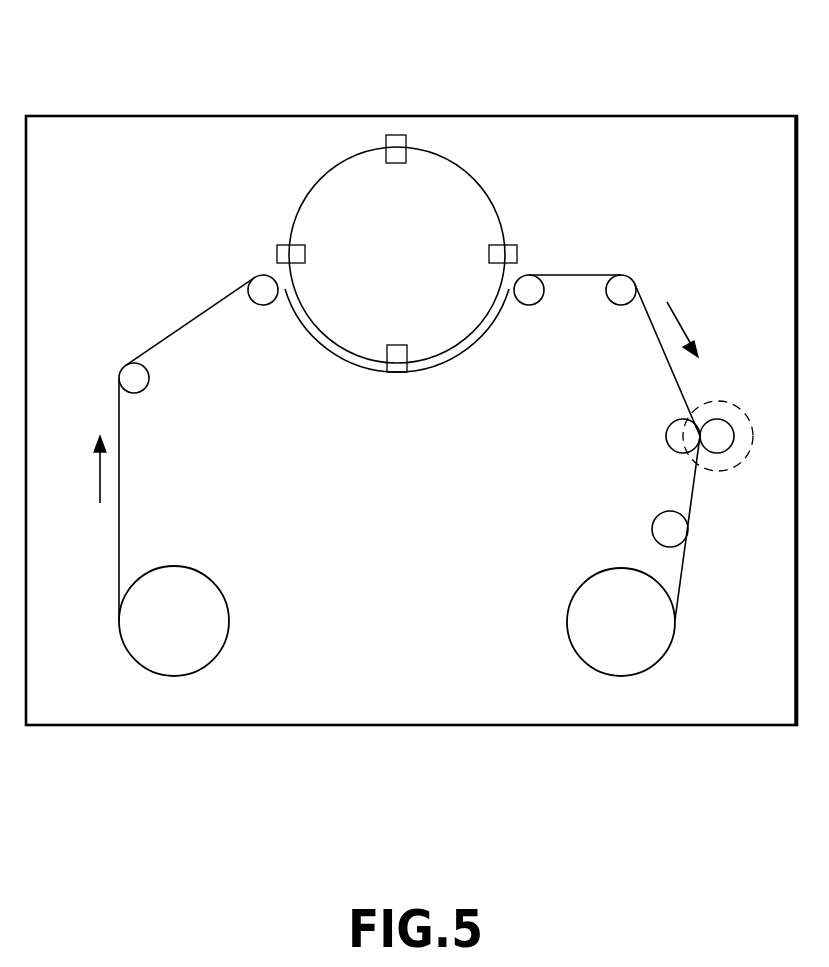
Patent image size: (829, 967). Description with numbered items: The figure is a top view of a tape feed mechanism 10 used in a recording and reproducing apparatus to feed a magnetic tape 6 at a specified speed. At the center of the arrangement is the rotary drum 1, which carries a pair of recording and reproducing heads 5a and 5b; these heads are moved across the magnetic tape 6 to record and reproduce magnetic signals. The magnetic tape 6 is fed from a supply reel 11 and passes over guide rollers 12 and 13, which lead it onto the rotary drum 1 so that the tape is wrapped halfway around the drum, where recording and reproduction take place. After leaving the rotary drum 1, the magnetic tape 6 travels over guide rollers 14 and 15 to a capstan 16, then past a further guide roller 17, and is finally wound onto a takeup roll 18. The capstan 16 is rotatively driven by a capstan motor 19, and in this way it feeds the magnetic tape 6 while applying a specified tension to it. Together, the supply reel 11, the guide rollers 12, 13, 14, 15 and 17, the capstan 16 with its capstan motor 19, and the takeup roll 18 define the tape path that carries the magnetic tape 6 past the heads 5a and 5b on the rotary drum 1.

The tape feed mechanism 10 is at (580, 92).
The rotary drum 1 is at (518, 193).
The recording and reproducing head 5a is at (397, 374).
The recording and reproducing head 5b is at (396, 140).
The magnetic tape 6 is at (577, 275).
The supply reel 11 is at (179, 582).
The guide roller 12 is at (139, 384).
The guide roller 13 is at (258, 297).
The guide roller 14 is at (529, 295).
The guide roller 15 is at (620, 297).
The capstan 16 is at (717, 432).
The guide roller 17 is at (662, 523).
The takeup roll 18 is at (652, 644).
The capstan motor 19 is at (717, 474).